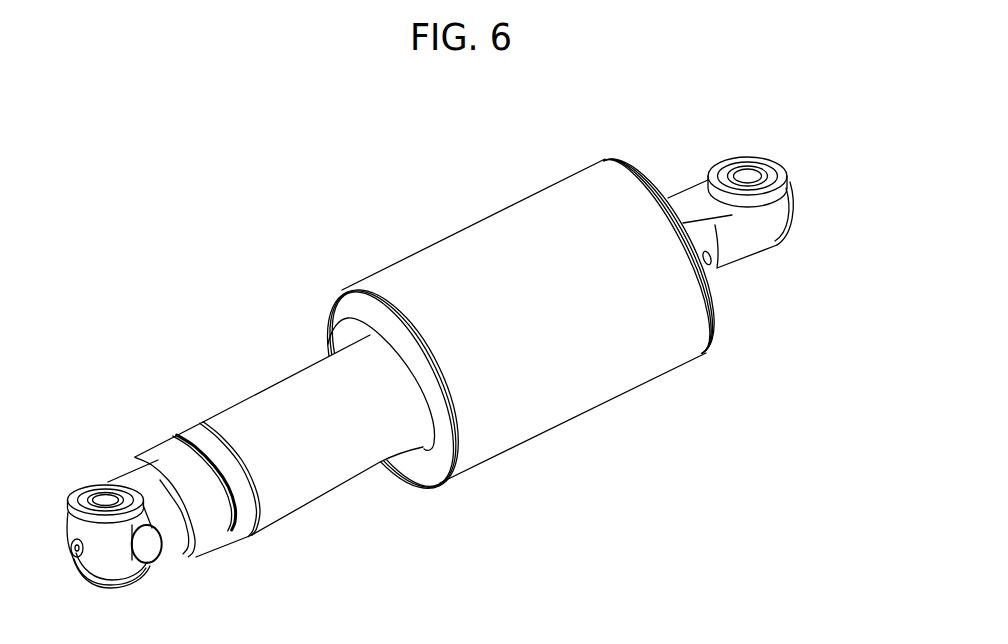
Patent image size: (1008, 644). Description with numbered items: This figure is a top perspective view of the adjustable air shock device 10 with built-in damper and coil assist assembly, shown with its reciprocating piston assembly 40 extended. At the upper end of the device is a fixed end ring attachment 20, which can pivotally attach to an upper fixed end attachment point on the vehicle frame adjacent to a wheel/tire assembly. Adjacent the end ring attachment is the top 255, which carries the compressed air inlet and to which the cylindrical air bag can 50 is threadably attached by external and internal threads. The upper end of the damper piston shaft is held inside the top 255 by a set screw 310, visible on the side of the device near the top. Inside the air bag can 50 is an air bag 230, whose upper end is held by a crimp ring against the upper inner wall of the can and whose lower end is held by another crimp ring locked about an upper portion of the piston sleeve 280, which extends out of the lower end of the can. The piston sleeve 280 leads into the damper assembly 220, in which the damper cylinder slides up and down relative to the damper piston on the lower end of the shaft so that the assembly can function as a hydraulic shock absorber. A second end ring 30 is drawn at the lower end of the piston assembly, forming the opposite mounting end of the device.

The adjustable air shock device 10 is at (454, 358).
The fixed end ring attachment 20 is at (747, 178).
The second eyelet mount 30 is at (98, 510).
The reciprocating piston assembly 40 is at (249, 455).
The air bag can 50 is at (612, 383).
The damper assembly 220 is at (210, 561).
The air bag 230 is at (358, 310).
The top 255 is at (730, 260).
The piston sleeve 280 is at (316, 479).
The set screw 310 is at (710, 275).